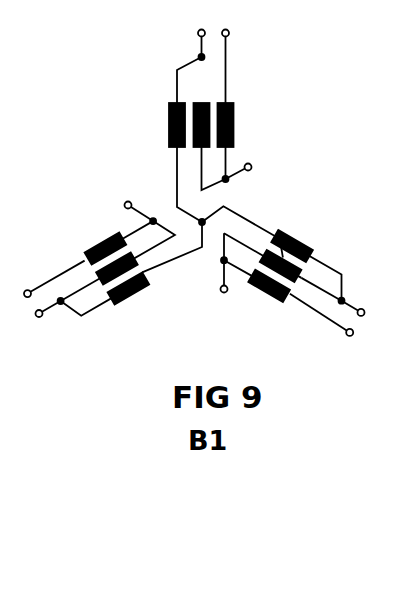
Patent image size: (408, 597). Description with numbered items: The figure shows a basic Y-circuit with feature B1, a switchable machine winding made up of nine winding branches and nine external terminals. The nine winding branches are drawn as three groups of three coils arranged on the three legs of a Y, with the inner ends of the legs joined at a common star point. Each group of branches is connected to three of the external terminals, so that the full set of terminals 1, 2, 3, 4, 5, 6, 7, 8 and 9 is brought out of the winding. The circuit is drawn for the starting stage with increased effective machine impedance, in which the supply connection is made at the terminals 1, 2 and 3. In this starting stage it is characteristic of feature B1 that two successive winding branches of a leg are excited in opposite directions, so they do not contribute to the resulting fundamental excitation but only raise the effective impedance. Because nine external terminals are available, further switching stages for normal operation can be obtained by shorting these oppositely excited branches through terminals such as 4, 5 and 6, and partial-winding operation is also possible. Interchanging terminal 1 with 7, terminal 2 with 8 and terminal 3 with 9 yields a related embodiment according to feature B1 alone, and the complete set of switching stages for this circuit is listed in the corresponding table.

The external terminal 1 is at (226, 30).
The external terminal 2 is at (352, 334).
The external terminal 3 is at (26, 290).
The external terminal 4 is at (202, 30).
The external terminal 5 is at (364, 314).
The external terminal 6 is at (38, 317).
The external terminal 7 is at (251, 166).
The external terminal 8 is at (224, 292).
The external terminal 9 is at (125, 203).